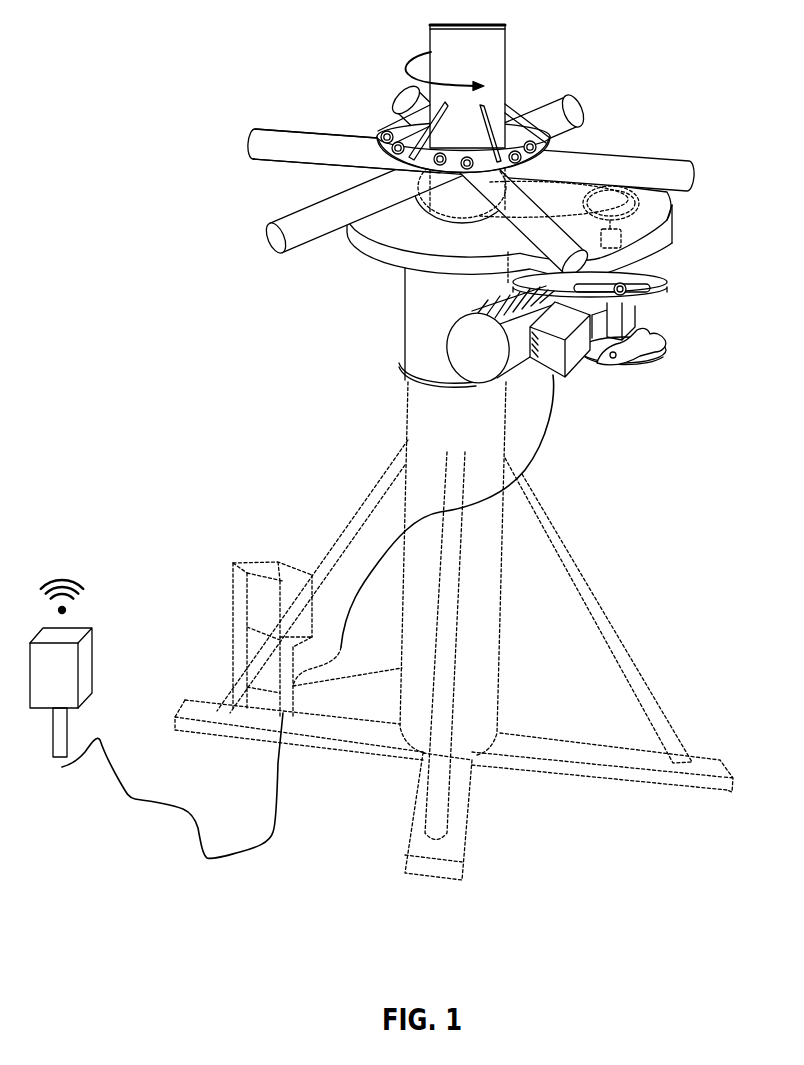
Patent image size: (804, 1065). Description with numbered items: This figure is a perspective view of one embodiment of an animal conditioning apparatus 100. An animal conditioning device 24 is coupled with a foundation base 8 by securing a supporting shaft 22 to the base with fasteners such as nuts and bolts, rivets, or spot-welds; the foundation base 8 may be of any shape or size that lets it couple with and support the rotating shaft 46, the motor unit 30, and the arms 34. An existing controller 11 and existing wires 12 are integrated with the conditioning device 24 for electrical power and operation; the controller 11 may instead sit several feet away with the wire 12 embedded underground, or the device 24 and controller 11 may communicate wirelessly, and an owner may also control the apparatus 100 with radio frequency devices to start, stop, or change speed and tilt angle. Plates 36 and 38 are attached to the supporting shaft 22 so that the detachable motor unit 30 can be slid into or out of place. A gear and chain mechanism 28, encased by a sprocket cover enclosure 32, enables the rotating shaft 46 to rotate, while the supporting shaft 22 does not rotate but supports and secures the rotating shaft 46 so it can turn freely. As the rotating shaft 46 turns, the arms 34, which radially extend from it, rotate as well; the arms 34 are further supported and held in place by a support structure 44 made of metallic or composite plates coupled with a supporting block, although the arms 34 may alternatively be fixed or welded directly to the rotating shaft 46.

The animal conditioning apparatus 100 is at (170, 80).
The foundation base 8 is at (430, 473).
The controller 11 is at (92, 630).
The wires 12 is at (352, 598).
The supporting shaft 22 is at (405, 336).
The animal conditioning device 24 is at (223, 314).
The gear and chain mechanism 28 is at (652, 206).
The motor unit 30 is at (572, 387).
The sprocket cover enclosure 32 is at (672, 231).
The arms 34 is at (612, 151).
The plate 36 is at (645, 360).
The plate 38 is at (666, 291).
The support structure 44 is at (352, 152).
The rotating shaft 46 is at (474, 204).